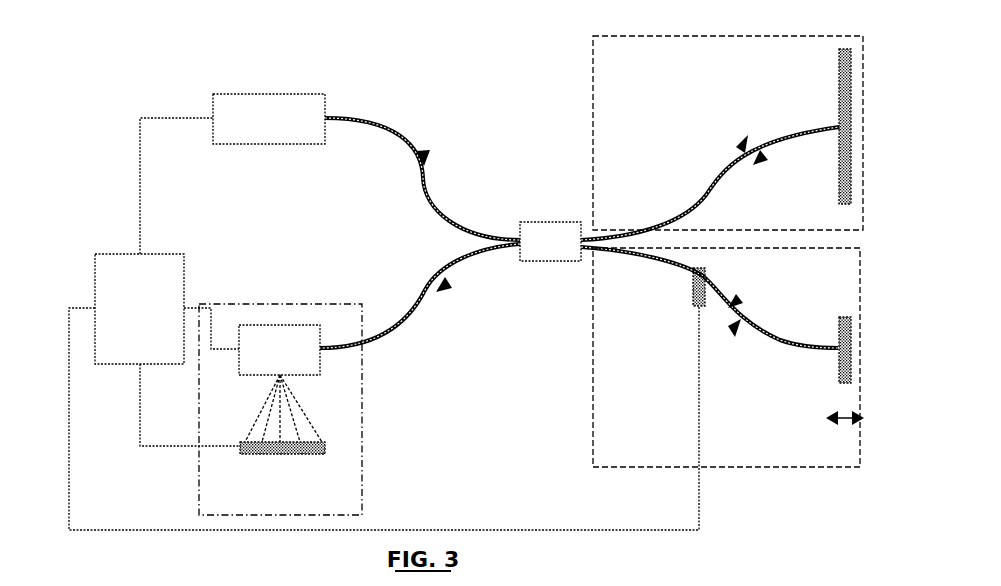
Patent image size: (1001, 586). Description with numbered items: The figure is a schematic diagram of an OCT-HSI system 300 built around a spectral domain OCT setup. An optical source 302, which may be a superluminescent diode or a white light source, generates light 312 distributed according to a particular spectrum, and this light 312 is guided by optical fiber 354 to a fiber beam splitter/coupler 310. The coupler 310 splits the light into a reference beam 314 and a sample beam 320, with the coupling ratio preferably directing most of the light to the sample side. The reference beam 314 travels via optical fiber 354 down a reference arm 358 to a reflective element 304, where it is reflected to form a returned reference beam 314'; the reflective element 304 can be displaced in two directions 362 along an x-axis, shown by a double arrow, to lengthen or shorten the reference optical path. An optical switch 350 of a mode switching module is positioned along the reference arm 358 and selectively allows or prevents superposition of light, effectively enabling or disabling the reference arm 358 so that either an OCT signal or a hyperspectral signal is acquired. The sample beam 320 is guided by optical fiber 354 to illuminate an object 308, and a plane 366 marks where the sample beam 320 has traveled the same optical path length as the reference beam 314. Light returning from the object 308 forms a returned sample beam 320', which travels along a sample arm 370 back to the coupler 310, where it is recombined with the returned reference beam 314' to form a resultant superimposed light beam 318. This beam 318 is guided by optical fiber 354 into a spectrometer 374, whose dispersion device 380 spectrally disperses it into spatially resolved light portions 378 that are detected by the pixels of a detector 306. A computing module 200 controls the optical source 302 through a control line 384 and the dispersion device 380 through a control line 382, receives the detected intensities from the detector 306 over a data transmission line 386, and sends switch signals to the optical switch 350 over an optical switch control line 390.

The OCT-HSI system 300 is at (48, 58).
The optical source 302 is at (269, 119).
The computing module 200 is at (139, 309).
The control line 384 is at (140, 178).
The data transmission line 386 is at (140, 412).
The control line 382 is at (212, 330).
The optical switch control line 390 is at (568, 528).
The spectrometer 374 is at (280, 409).
The dispersion device 380 is at (279, 351).
The spatially resolved light portions 378 is at (265, 423).
The detector 306 is at (301, 455).
The fiber beam splitter/coupler 310 is at (553, 222).
The optical fiber 354 is at (368, 121).
The light 312 is at (426, 152).
The resultant superimposed light beam 318 is at (454, 272).
The sample arm 370 is at (776, 36).
The object 308 is at (852, 106).
The returned sample beam 320' is at (737, 126).
The sample beam 320 is at (763, 171).
The plane 366 is at (841, 205).
The reference arm 358 is at (764, 469).
The reflective element 304 is at (852, 369).
The optical switch 350 is at (693, 298).
The returned reference beam 314' is at (746, 289).
The reference beam 314 is at (726, 338).
The two directions 362 is at (841, 427).